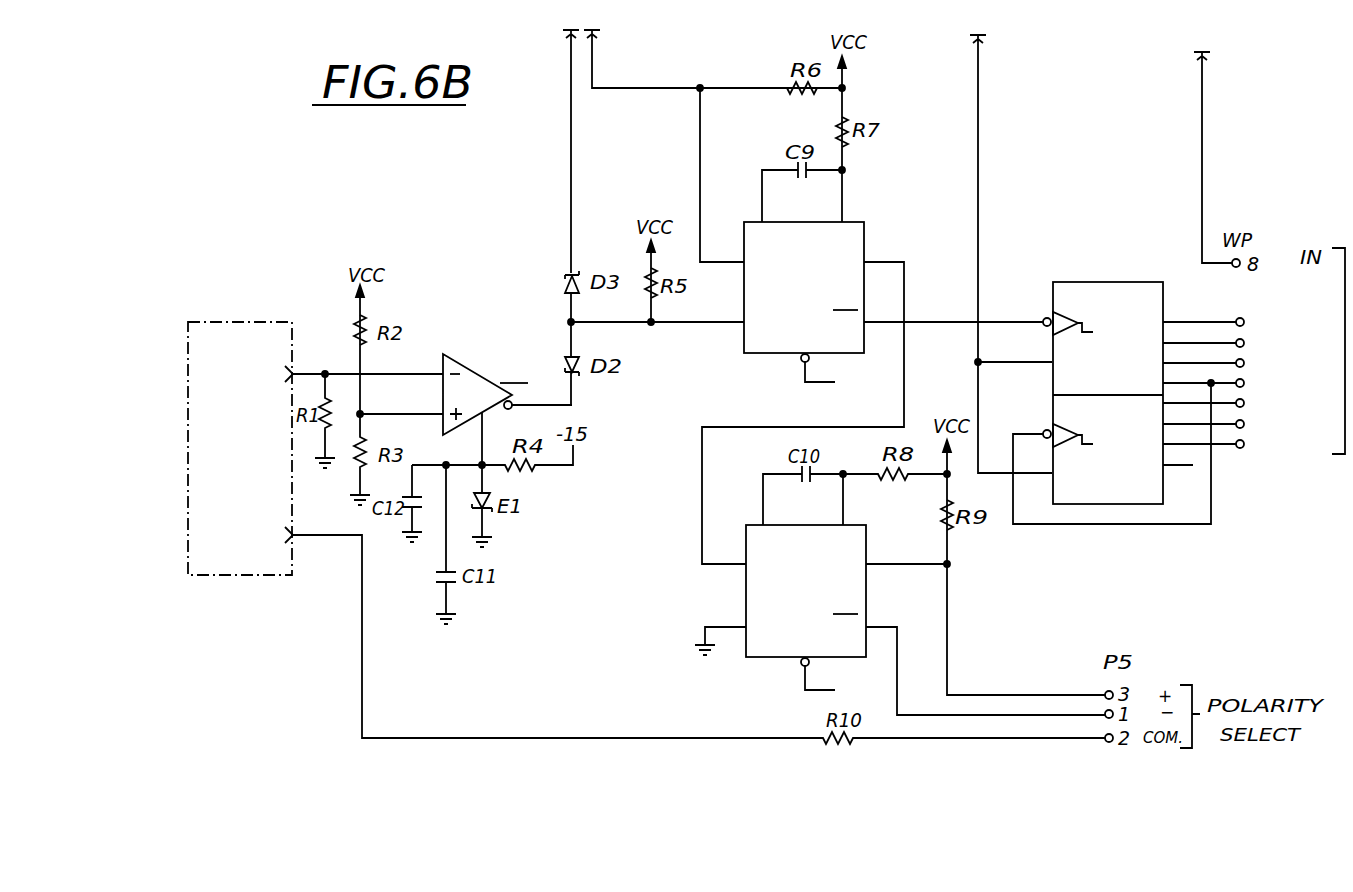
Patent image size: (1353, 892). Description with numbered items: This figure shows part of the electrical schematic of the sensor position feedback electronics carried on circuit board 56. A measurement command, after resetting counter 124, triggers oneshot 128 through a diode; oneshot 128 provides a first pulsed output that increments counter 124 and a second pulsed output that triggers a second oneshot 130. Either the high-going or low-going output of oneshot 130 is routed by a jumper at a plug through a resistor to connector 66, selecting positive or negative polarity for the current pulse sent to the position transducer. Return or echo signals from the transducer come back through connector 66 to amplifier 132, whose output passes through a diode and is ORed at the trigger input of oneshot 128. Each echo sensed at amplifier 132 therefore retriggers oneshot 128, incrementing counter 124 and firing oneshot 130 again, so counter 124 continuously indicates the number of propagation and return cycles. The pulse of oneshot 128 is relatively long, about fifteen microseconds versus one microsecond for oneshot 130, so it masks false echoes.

The circuit board 56 is at (1097, 90).
The connector 66 is at (255, 330).
The counter 124 is at (1112, 280).
The oneshot 128 is at (868, 233).
The second oneshot 130 is at (742, 591).
The amplifier 132 is at (488, 320).